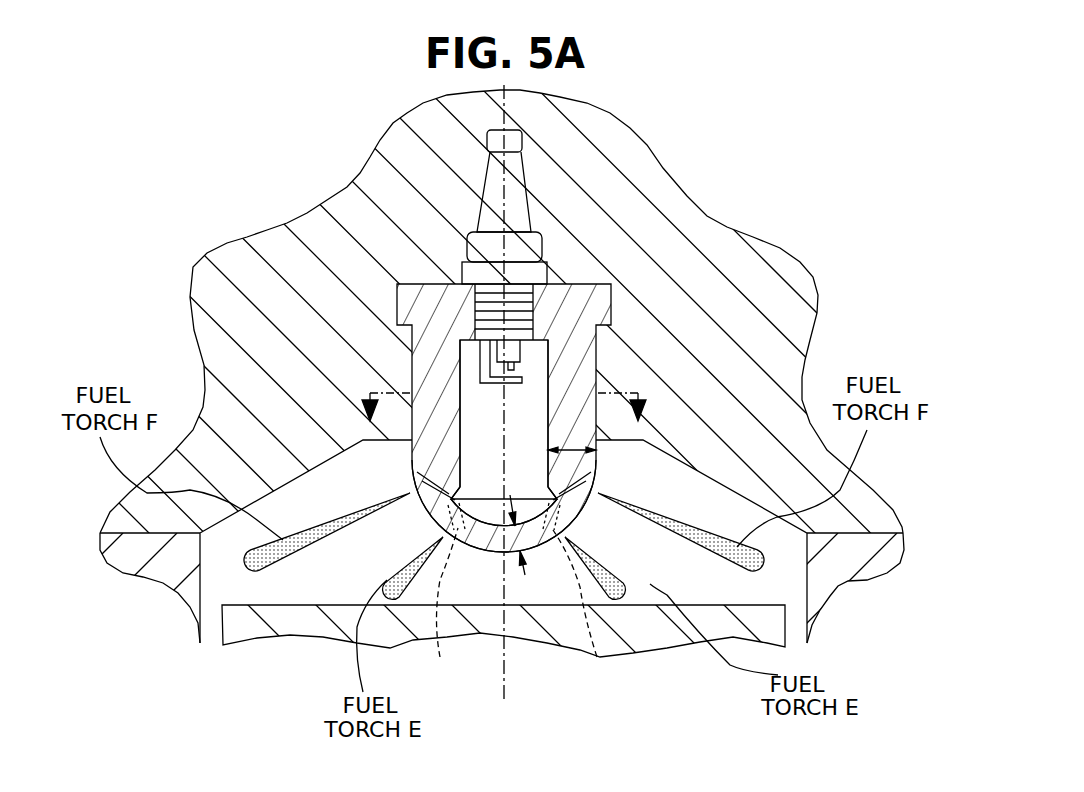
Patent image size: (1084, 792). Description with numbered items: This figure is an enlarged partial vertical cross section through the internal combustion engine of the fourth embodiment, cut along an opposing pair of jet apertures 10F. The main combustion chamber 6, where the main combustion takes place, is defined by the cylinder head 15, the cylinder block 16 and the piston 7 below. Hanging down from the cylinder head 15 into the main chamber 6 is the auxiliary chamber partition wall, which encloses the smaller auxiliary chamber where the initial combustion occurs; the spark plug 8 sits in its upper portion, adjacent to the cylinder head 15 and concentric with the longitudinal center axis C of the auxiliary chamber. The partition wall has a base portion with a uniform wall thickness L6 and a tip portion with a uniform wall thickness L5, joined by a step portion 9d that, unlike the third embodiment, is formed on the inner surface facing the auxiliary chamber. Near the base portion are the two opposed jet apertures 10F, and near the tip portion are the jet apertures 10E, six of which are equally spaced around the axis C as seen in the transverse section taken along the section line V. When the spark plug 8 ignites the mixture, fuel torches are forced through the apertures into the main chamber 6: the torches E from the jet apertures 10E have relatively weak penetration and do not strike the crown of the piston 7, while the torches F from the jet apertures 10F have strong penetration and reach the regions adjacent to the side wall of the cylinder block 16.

The main combustion chamber 6 is at (321, 593).
The piston 7 is at (287, 618).
The spark plug 8 is at (522, 177).
The step portion 9d is at (560, 487).
The jet apertures 10E is at (506, 613).
The jet apertures 10F is at (447, 473).
The cylinder head 15 is at (750, 383).
The cylinder block 16 is at (807, 580).
The wall thickness L5 is at (527, 549).
The wall thickness L6 is at (557, 449).
The longitudinal center axis C is at (515, 393).
The section line V is at (504, 393).